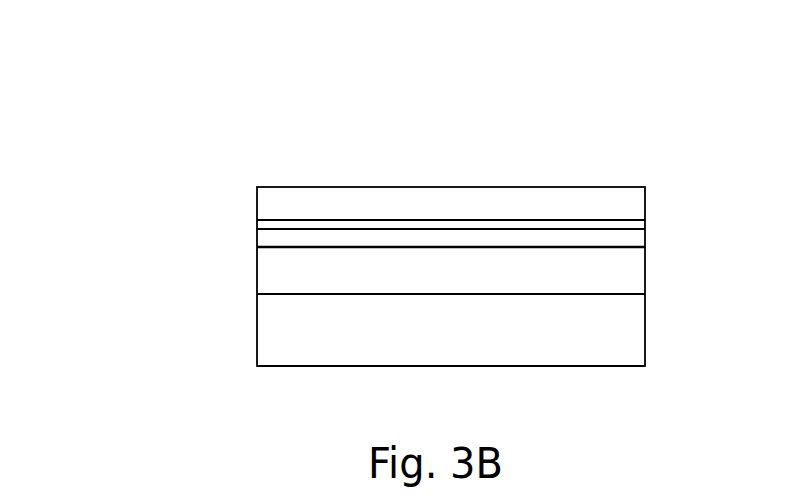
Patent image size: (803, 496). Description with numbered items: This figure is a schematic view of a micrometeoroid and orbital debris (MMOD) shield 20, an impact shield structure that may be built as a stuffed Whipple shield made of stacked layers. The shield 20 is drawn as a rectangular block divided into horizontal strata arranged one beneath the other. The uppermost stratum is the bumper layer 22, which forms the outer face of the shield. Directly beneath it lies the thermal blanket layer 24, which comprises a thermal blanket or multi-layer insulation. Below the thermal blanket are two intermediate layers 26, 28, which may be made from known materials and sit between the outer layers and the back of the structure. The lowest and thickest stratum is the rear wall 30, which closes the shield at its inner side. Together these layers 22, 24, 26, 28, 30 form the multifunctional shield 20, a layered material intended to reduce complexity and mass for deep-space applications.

The MMOD shield 20 is at (560, 186).
The bumper layer 22 is at (257, 202).
The thermal blanket layer 24 is at (257, 224).
The intermediate layer 26 is at (257, 239).
The intermediate layer 28 is at (257, 276).
The rear wall 30 is at (257, 332).